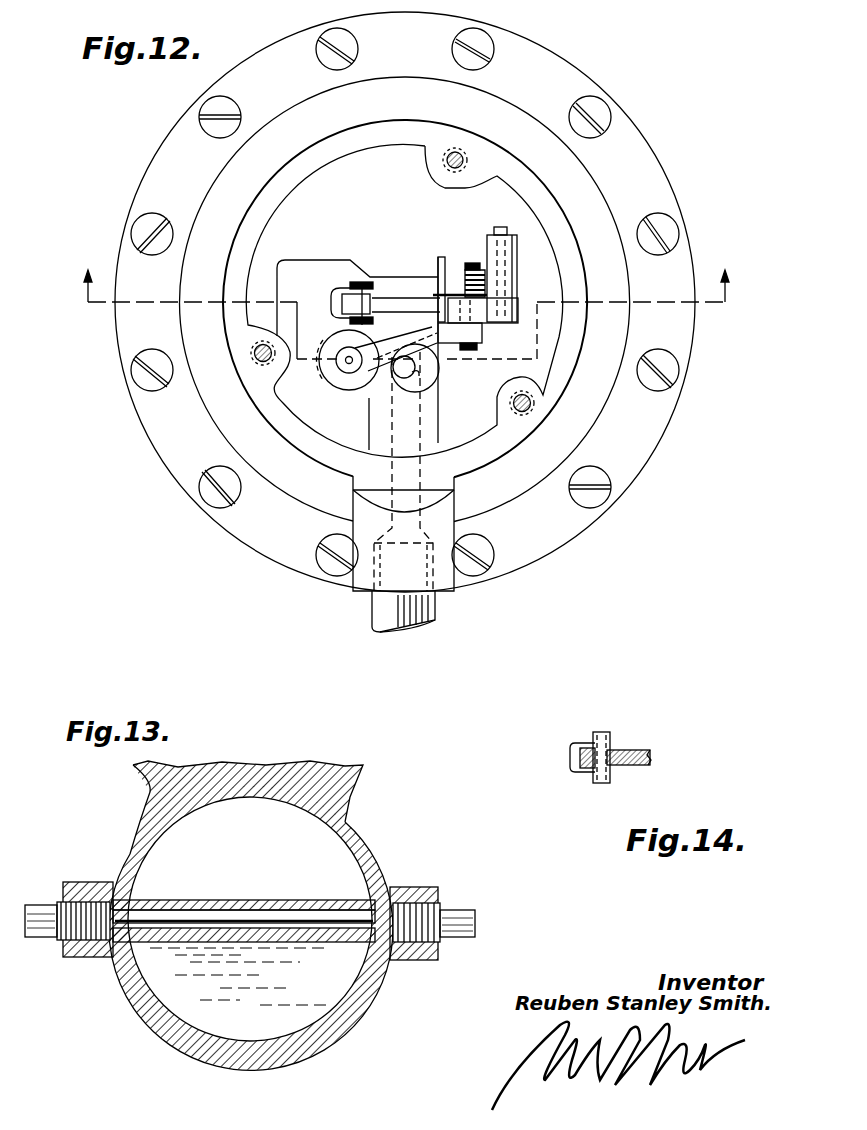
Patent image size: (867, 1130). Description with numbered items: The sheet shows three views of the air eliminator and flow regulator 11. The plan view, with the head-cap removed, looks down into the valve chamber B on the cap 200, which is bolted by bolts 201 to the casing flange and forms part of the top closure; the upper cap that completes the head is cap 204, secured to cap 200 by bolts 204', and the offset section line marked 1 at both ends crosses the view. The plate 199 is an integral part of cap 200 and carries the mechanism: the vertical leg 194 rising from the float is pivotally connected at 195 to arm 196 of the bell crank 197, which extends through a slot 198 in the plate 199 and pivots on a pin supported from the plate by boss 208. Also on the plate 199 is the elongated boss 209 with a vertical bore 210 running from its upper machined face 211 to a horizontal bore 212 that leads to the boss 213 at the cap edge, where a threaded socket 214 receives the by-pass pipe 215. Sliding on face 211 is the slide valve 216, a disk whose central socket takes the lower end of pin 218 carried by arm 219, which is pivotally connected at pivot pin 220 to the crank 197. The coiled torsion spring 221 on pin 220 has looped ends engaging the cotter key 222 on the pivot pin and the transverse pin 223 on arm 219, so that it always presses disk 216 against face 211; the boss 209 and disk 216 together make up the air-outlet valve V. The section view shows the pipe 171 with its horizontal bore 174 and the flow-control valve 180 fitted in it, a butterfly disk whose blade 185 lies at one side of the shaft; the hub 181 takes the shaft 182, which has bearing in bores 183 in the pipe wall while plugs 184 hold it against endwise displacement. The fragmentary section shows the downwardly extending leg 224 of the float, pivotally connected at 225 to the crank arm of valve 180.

In FIG. 12, the air eliminator and flow regulator 11 is at (676, 176).
In FIG. 12, the section line 1 is at (404, 314).
In FIG. 12, the valve chamber B is at (316, 216).
In FIG. 12, the air-outlet valve V is at (383, 376).
In FIG. 12, the vertical leg 194 is at (335, 293).
In FIG. 12, the pivot connection 195 is at (378, 290).
In FIG. 12, the arm of bell crank 196 is at (383, 296).
In FIG. 12, the bell crank 197 is at (388, 292).
In FIG. 12, the slot 198 is at (395, 290).
In FIG. 12, the plate 199 is at (480, 194).
In FIG. 12, the cap 200 is at (567, 432).
In FIG. 12, the bolts 201 is at (498, 225).
In FIG. 12, the cap 204 is at (331, 256).
In FIG. 12, the bolts 204' is at (552, 403).
In FIG. 12, the boss 208 is at (517, 257).
In FIG. 12, the elongated boss 209 is at (398, 403).
In FIG. 12, the vertical bore 210 is at (408, 385).
In FIG. 12, the upper machined face 211 is at (403, 388).
In FIG. 12, the horizontal bore 212 is at (392, 428).
In FIG. 12, the boss 213 is at (362, 570).
In FIG. 12, the threaded socket 214 is at (380, 584).
In FIG. 12, the by-pass pipe 215 is at (392, 620).
In FIG. 12, the slide valve 216 is at (342, 384).
In FIG. 12, the pin 218 is at (350, 365).
In FIG. 12, the arm 219 is at (419, 372).
In FIG. 12, the pivot pin 220 is at (480, 348).
In FIG. 12, the coiled torsion spring 221 is at (465, 264).
In FIG. 12, the cotter key 222 is at (470, 263).
In FIG. 12, the transverse pin 223 is at (450, 246).
In FIG. 13, the pipe 171 is at (266, 1068).
In FIG. 13, the horizontal bore 174 is at (328, 858).
In FIG. 13, the flow-control valve 180 is at (312, 975).
In FIG. 13, the hub 181 is at (250, 905).
In FIG. 13, the shaft 182 is at (290, 918).
In FIG. 13, the bores 183 is at (118, 882).
In FIG. 13, the plugs 184 is at (80, 907).
In FIG. 13, the blade 185 is at (205, 1012).
In FIG. 14, the leg 224 is at (578, 775).
In FIG. 14, the pivot connection 225 is at (600, 735).